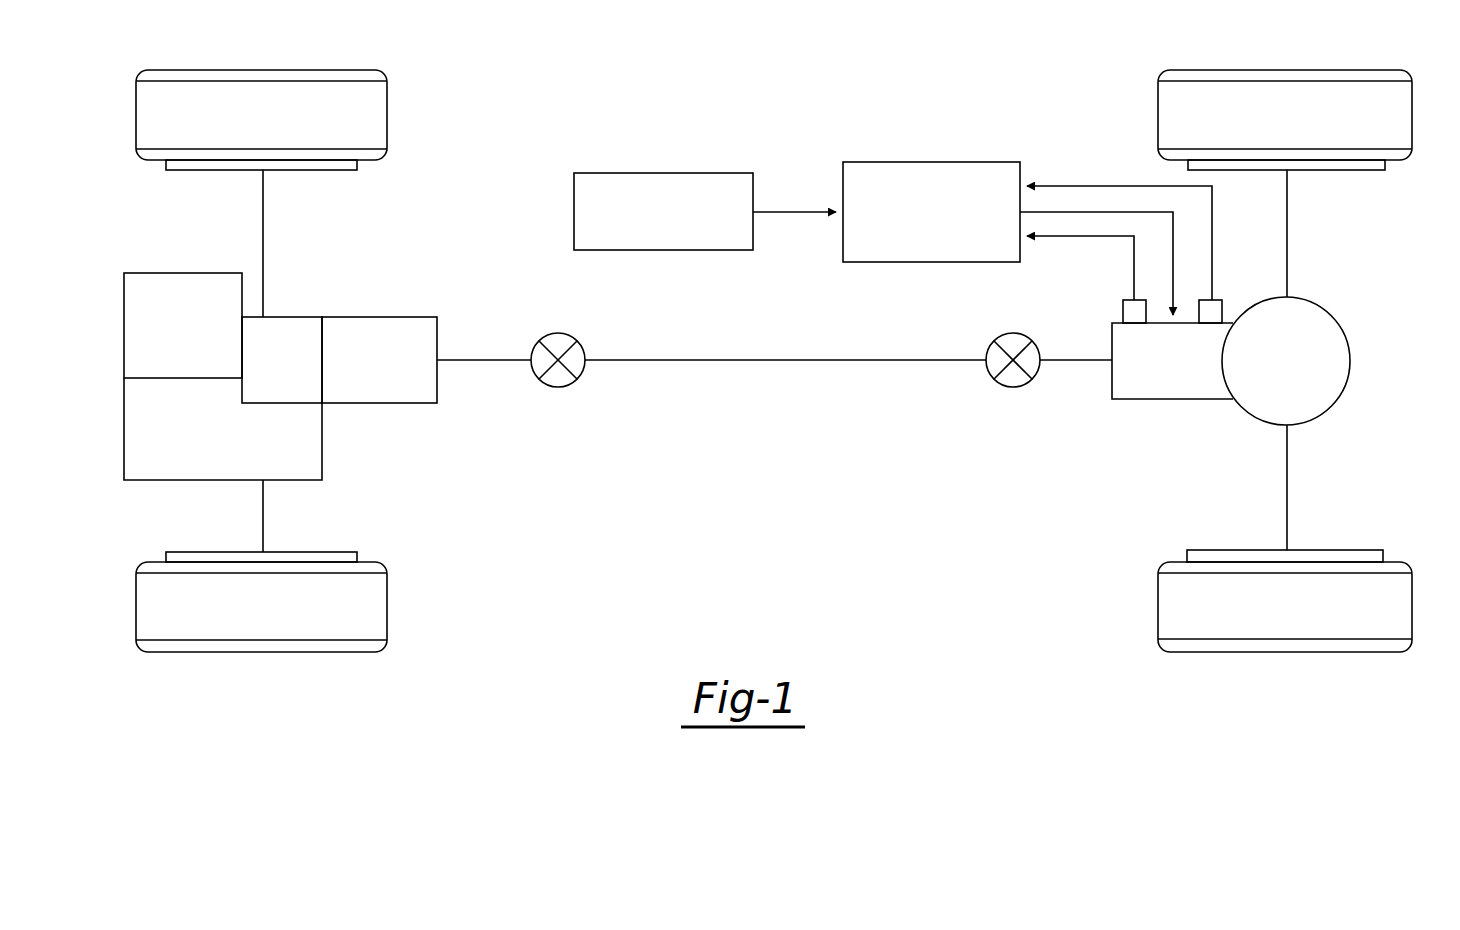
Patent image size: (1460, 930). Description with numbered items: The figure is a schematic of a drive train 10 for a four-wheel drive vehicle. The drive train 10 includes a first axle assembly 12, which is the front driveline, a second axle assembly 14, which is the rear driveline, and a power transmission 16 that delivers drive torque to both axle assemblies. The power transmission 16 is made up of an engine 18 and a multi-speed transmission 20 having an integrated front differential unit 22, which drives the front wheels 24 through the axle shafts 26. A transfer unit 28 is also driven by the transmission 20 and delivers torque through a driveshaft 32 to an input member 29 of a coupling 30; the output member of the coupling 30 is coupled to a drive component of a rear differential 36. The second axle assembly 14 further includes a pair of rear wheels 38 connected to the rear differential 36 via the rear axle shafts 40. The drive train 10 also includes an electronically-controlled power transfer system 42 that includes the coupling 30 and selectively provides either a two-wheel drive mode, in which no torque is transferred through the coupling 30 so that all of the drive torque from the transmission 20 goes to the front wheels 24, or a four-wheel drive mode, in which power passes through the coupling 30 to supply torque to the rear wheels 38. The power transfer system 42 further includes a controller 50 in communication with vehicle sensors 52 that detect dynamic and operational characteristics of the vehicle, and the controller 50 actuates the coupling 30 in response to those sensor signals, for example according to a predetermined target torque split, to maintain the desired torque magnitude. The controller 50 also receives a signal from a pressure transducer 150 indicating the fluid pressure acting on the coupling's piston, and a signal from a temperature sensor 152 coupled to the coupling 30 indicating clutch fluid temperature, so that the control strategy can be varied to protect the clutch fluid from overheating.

The drive train 10 is at (920, 534).
The first axle assembly 12 is at (316, 244).
The second axle assembly 14 is at (1342, 260).
The power transmission 16 is at (399, 452).
The engine 18 is at (160, 346).
The multi-speed transmission 20 is at (176, 447).
The front differential unit 22 is at (264, 382).
The front wheels 24 is at (376, 108).
The axle shafts 26 is at (262, 232).
The transfer unit 28 is at (359, 382).
The input member 29 is at (1068, 361).
The coupling 30 is at (1172, 418).
The driveshaft 32 is at (702, 386).
The rear differential 36 is at (1316, 390).
The rear wheels 38 is at (1173, 112).
The rear axle shafts 40 is at (1288, 205).
The power transfer system 42 is at (812, 95).
The controller 50 is at (925, 161).
The vehicle sensors 52 is at (660, 172).
The pressure transducer 150 is at (1217, 310).
The temperature sensor 152 is at (1130, 312).